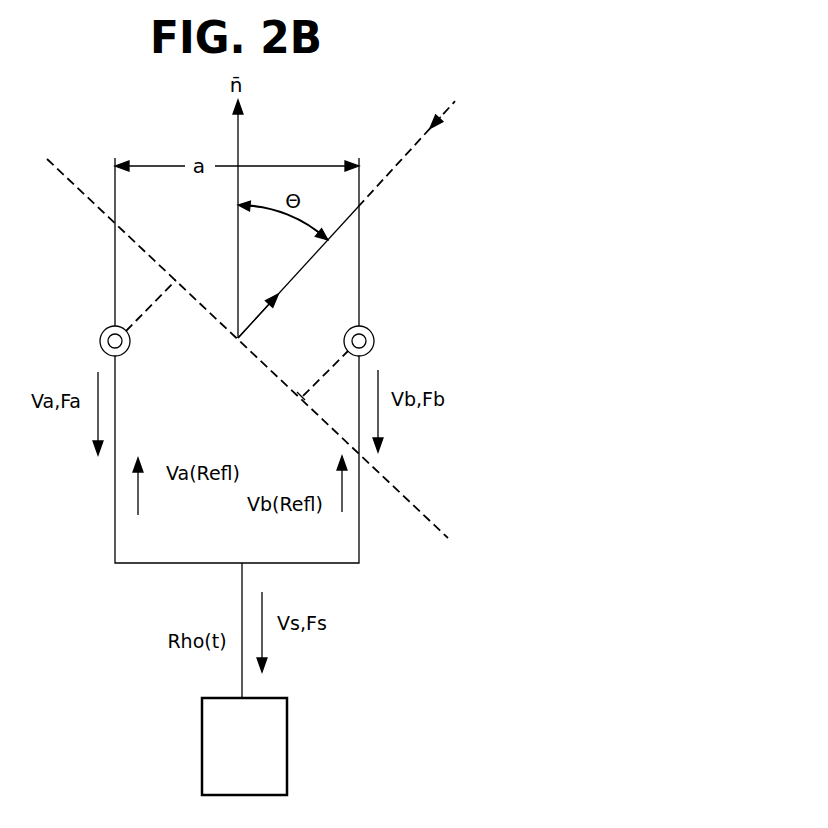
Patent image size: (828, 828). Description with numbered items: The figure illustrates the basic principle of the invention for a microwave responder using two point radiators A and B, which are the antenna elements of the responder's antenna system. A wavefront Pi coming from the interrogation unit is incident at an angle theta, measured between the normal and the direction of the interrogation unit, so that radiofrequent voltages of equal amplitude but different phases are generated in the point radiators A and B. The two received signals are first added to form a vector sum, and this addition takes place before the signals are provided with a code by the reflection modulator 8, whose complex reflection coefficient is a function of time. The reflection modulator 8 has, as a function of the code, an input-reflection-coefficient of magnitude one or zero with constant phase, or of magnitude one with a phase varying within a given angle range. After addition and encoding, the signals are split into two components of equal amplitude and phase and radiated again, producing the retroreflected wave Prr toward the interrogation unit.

The reflection modulator 8 is at (277, 750).
The point radiator A is at (104, 327).
The point radiator B is at (369, 324).
The wavefront Pi is at (414, 154).
The retroreflected wave Prr is at (298, 272).